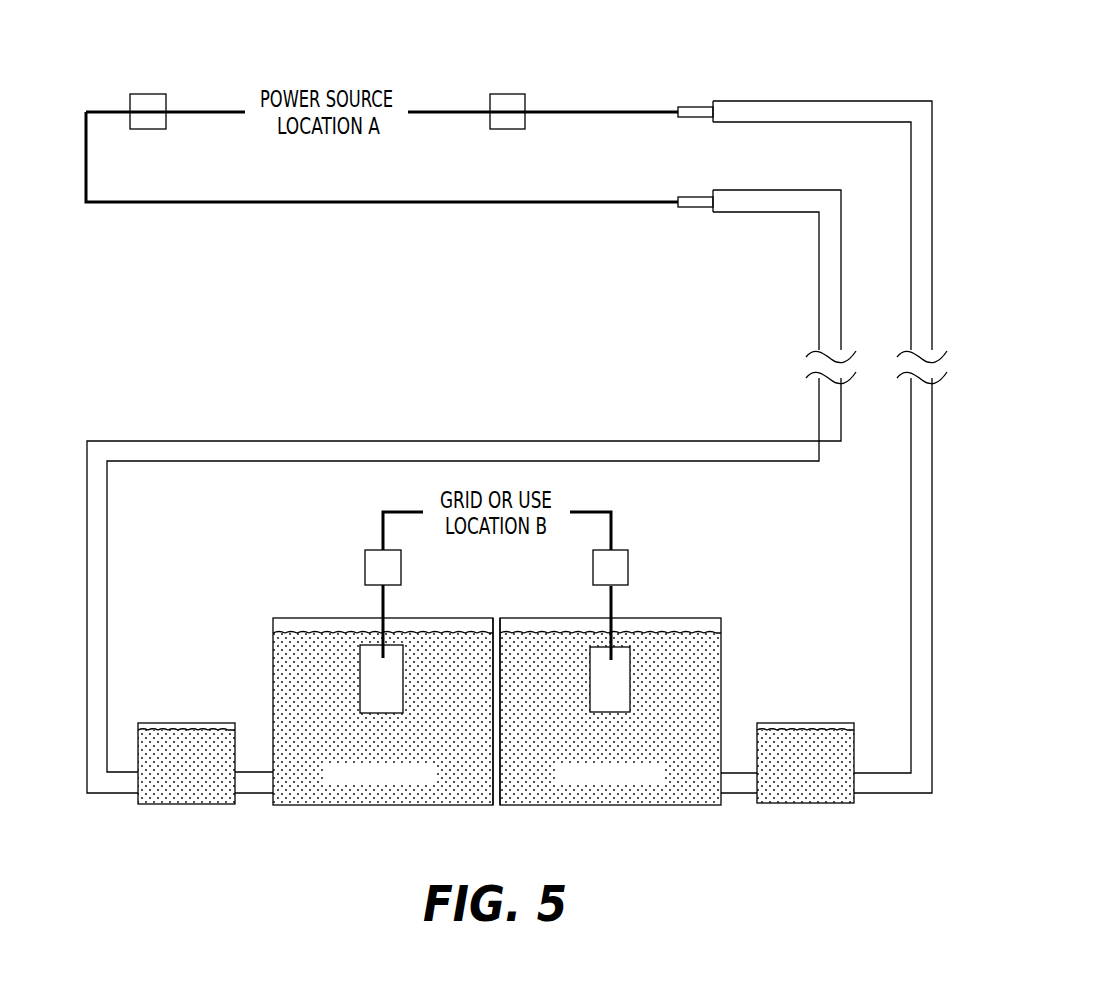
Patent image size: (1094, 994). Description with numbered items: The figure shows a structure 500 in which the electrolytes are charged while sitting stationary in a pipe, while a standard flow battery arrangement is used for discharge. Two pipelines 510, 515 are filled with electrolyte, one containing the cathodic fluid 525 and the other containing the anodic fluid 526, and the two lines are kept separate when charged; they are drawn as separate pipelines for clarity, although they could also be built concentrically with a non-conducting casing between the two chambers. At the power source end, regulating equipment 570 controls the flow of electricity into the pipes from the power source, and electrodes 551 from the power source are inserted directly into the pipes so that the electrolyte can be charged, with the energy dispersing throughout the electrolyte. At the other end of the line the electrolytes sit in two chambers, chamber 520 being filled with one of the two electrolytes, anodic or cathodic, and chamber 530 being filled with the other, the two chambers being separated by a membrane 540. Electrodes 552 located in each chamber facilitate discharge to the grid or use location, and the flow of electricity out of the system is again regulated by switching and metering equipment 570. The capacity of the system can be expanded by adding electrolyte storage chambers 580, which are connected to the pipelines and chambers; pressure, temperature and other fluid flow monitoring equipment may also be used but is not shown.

The structure 500 is at (972, 82).
The pipeline 510 is at (932, 143).
The pipeline 515 is at (819, 273).
The chamber 520 is at (273, 659).
The cathodic fluid 525 is at (470, 780).
The anodic fluid 526 is at (525, 780).
The chamber 530 is at (721, 659).
The membrane 540 is at (503, 653).
The electrodes 551 is at (696, 107).
The electrodes 552 is at (375, 657).
The regulating equipment 570 is at (148, 94).
The electrolyte storage chambers 580 is at (172, 723).